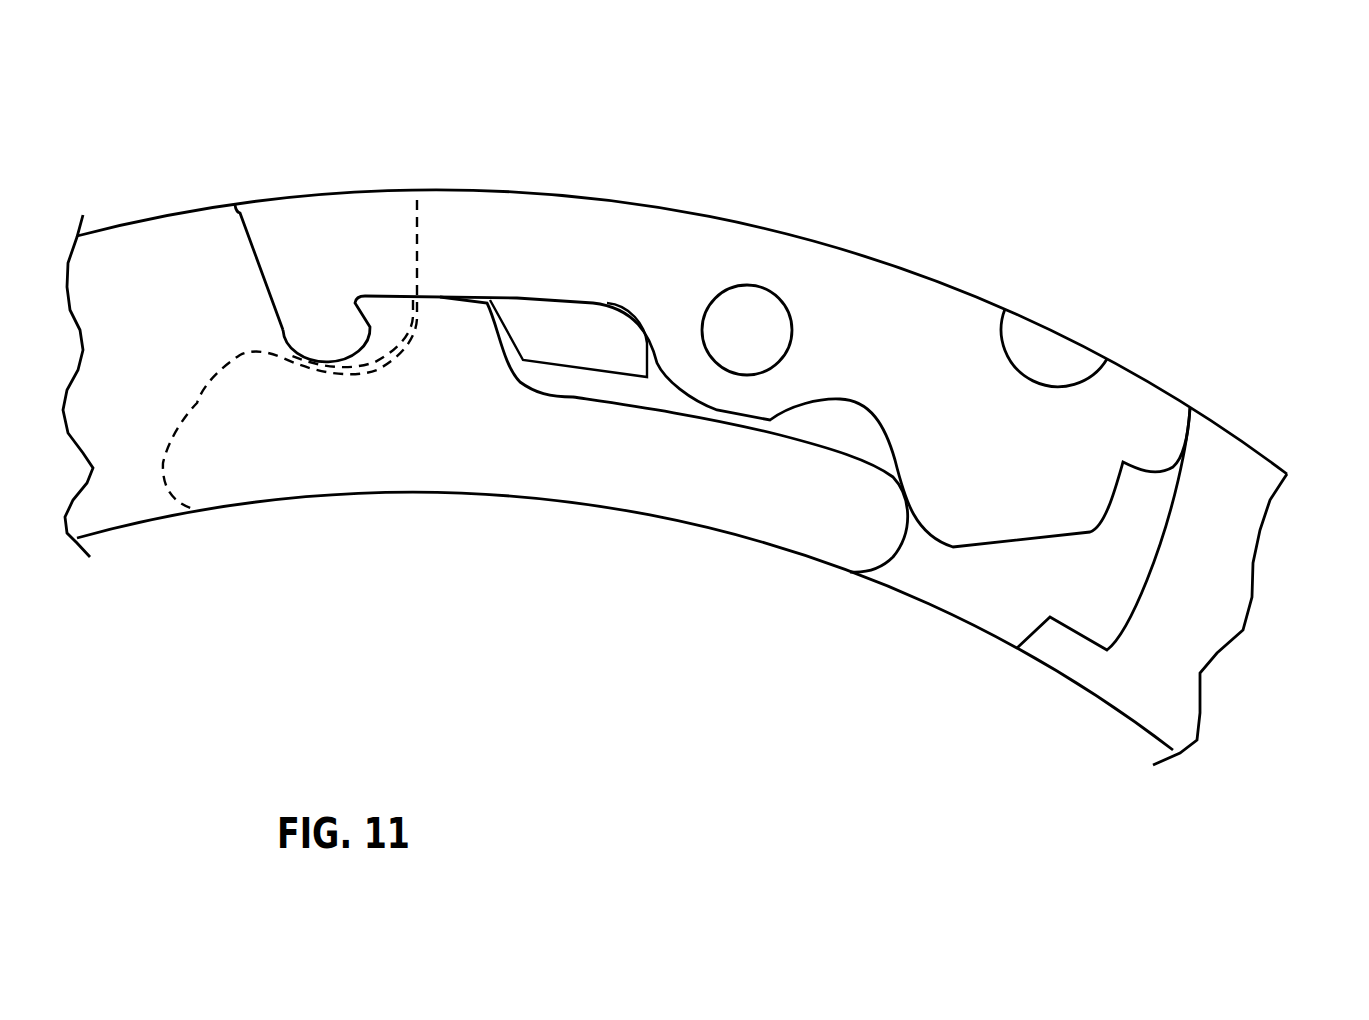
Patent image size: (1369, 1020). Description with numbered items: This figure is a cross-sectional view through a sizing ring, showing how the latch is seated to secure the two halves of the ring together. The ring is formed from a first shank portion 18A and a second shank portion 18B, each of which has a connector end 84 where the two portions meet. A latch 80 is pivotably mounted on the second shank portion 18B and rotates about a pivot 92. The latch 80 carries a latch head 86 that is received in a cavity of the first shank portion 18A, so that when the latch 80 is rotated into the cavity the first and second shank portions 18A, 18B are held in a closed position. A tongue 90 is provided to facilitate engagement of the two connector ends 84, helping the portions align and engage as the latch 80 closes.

The first shank portion 18A is at (153, 250).
The second shank portion 18B is at (1223, 460).
The latch 80 is at (510, 222).
The connector end 84 is at (197, 403).
The latch head 86 is at (343, 337).
The tongue 90 is at (597, 487).
The pivot 92 is at (747, 325).